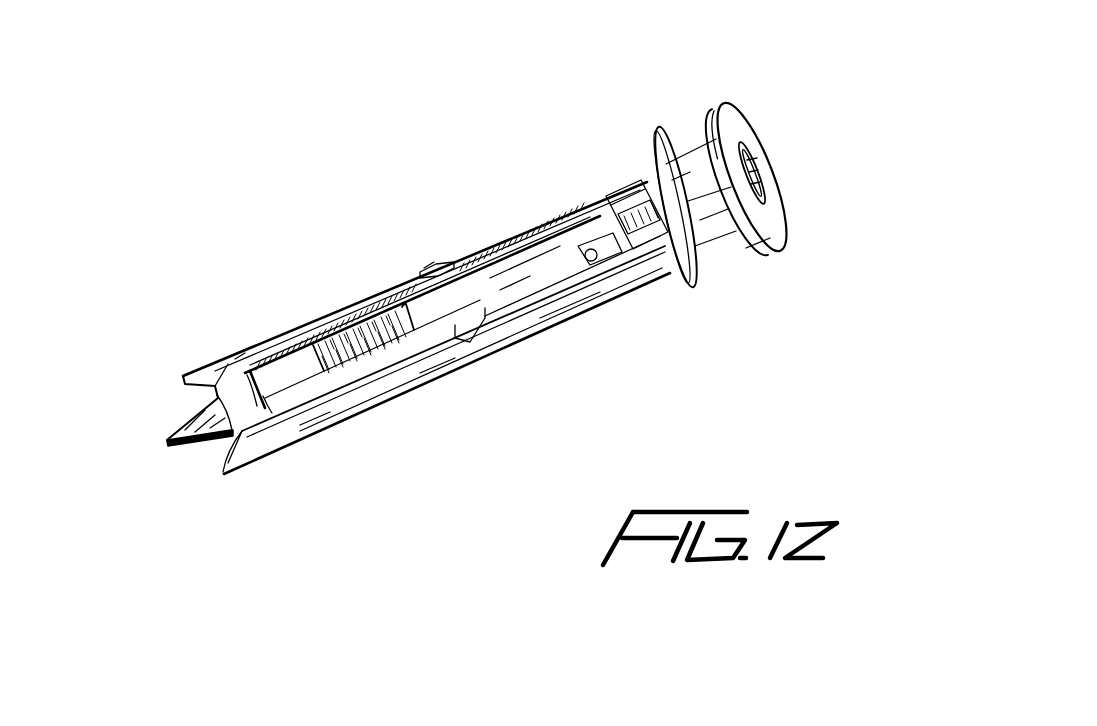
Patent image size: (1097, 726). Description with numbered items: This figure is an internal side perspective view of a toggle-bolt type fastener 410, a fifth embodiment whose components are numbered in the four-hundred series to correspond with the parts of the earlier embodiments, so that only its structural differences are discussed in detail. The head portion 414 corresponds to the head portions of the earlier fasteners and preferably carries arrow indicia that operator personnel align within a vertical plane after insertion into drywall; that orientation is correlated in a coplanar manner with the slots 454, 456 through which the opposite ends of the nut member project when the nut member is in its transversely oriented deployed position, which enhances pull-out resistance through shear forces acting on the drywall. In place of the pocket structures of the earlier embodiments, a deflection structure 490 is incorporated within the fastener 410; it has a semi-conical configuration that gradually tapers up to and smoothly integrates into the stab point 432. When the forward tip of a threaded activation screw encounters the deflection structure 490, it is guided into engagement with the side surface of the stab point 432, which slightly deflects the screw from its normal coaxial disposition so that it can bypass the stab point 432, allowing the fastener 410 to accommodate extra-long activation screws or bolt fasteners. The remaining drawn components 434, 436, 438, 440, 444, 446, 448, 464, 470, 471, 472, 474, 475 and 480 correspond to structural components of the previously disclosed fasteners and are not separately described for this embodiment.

The toggle-bolt type fastener 410 is at (469, 190).
The head portion 414 is at (734, 112).
The stab point 432 is at (166, 446).
The wings 434 is at (182, 378).
The hub 436 is at (760, 250).
The lower housing 438 is at (353, 400).
The inner tube 440 is at (354, 302).
The tube surface 444 is at (536, 222).
The step 446 is at (482, 347).
The slider 448 is at (424, 272).
The slot 454 is at (408, 266).
The slot 456 is at (398, 285).
The spring section 464 is at (340, 348).
The pin 470 is at (579, 258).
The latch block 471 is at (598, 202).
The latch 472 is at (624, 200).
The collar 474 is at (714, 258).
The latch base 475 is at (621, 252).
The front edge 480 is at (240, 352).
The deflection structure 490 is at (283, 404).